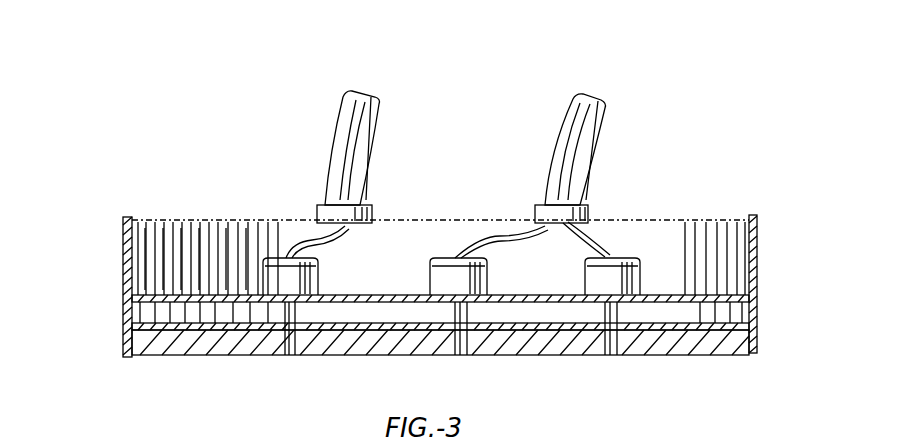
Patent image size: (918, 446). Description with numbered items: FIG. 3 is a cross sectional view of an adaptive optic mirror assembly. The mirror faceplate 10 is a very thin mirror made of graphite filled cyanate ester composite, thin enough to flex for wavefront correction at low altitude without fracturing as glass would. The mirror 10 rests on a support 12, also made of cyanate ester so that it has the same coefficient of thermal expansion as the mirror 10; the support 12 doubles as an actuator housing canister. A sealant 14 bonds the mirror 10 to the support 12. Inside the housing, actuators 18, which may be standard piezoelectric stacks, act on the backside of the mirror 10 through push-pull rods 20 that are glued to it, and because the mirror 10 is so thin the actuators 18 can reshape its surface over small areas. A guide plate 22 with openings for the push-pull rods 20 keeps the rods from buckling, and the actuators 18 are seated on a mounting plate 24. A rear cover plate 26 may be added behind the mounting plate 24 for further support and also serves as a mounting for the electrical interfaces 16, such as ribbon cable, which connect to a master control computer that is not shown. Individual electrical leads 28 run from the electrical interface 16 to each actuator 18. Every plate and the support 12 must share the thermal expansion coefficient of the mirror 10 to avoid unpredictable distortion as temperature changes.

The mirror faceplate 10 is at (436, 254).
The support 12 is at (757, 262).
The sealant 14 is at (128, 358).
The electrical interfaces 16 is at (372, 142).
The actuators 18 is at (268, 258).
The push-pull rods 20 is at (297, 340).
The guide plate 22 is at (720, 322).
The mounting plate 24 is at (372, 298).
The rear cover plate 26 is at (700, 220).
The electrical leads 28 is at (303, 240).